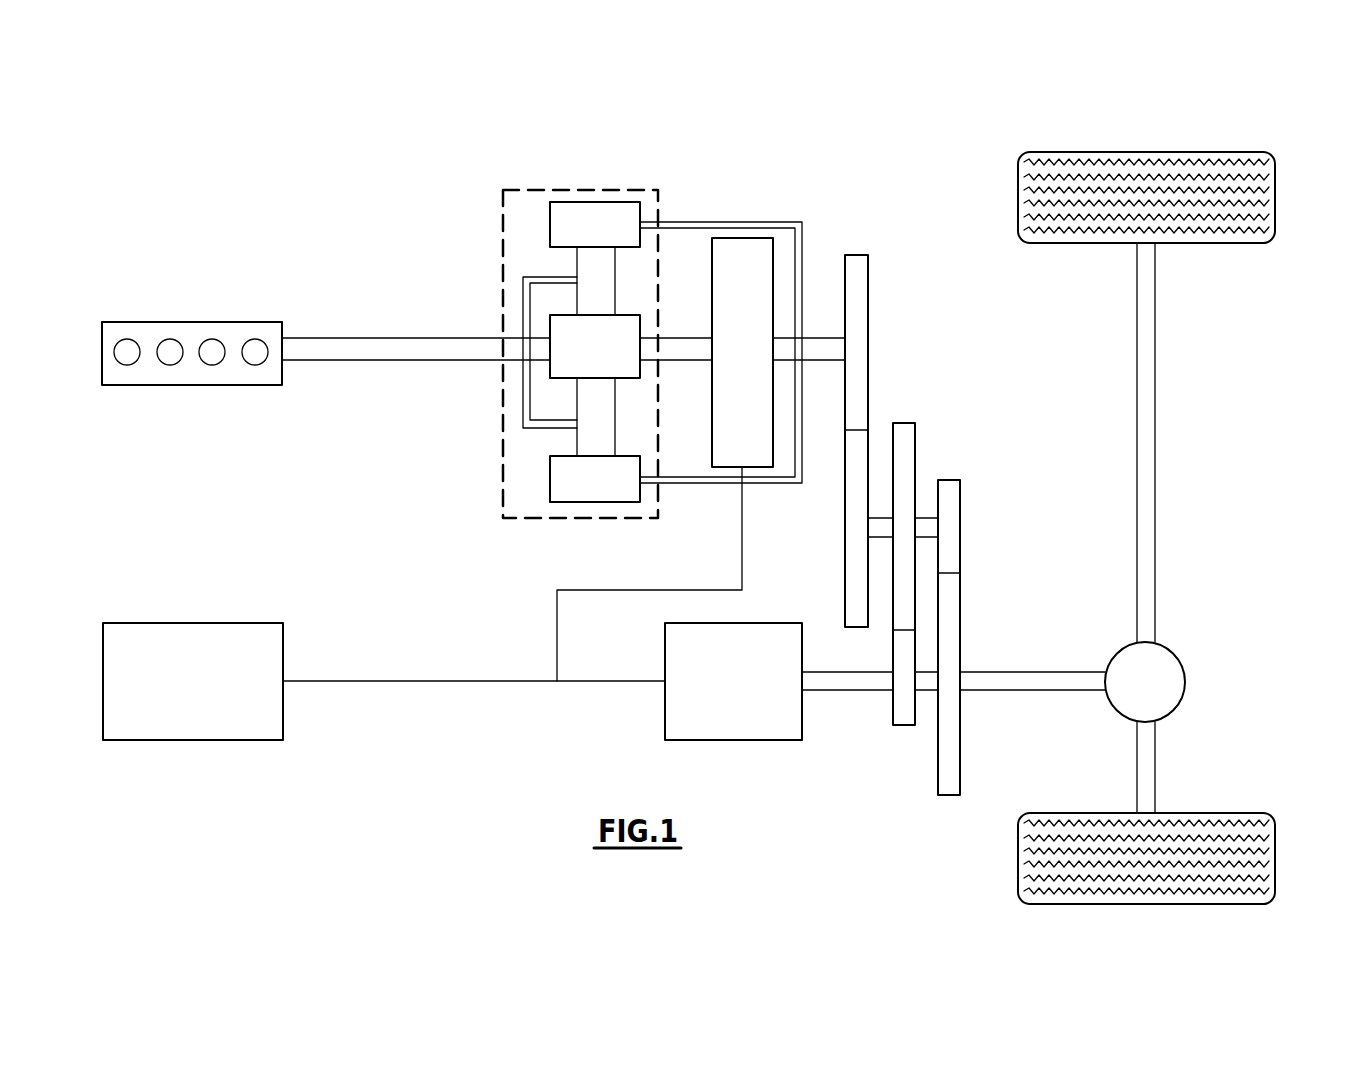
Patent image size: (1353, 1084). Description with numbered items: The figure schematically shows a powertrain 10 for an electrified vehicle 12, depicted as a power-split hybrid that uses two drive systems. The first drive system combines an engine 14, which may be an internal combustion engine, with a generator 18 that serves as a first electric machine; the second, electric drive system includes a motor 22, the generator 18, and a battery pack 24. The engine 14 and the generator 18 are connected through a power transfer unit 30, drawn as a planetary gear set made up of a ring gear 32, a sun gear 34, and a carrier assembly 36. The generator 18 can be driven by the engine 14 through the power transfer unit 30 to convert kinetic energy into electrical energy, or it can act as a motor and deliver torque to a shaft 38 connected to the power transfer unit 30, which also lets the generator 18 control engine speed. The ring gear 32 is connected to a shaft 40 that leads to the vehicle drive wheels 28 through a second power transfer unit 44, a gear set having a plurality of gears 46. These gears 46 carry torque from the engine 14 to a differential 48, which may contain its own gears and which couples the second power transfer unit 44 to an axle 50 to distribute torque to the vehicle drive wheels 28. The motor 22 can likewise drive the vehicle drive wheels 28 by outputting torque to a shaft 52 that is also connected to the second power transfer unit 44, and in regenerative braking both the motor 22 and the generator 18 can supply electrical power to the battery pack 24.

The powertrain 10 is at (343, 215).
The electrified vehicle 12 is at (771, 139).
The engine 14 is at (120, 322).
The generator 18 is at (718, 238).
The motor 22 is at (803, 722).
The battery pack 24 is at (122, 623).
The vehicle drive wheels 28 is at (1128, 152).
The power transfer unit 30 is at (503, 470).
The ring gear 32 is at (550, 222).
The sun gear 34 is at (550, 325).
The carrier assembly 36 is at (523, 412).
The shaft 38 is at (677, 336).
The shaft 40 is at (822, 336).
The second power transfer unit 44 is at (945, 382).
The gears 46 is at (870, 392).
The differential 48 is at (1178, 702).
The axle 50 is at (1158, 432).
The shaft 52 is at (860, 692).